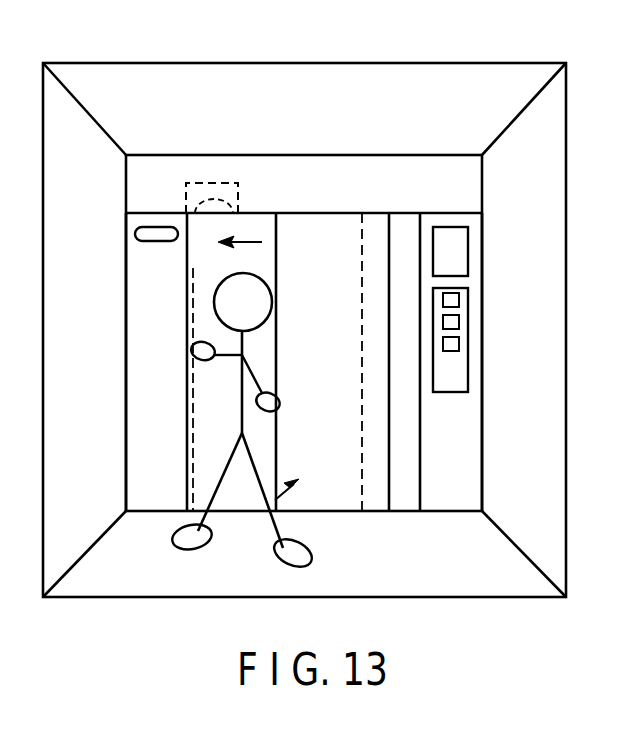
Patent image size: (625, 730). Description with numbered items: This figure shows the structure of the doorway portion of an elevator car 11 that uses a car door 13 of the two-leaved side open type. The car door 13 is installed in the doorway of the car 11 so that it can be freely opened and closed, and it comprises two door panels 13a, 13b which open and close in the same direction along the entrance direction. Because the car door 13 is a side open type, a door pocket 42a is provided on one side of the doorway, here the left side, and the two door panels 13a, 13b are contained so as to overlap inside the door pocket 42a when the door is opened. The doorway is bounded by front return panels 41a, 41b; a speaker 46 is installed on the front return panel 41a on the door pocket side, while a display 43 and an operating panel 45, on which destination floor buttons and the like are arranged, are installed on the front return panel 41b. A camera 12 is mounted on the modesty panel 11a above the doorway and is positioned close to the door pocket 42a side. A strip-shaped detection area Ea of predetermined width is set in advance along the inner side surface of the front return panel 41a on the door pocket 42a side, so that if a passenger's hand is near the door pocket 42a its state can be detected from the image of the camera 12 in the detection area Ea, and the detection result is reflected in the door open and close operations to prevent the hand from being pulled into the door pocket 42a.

The car 11 is at (509, 62).
The modesty panel 11a is at (388, 178).
The camera 12 is at (239, 199).
The car door 13 is at (277, 513).
The door panel 13a is at (323, 482).
The door panel 13b is at (373, 490).
The front return panel 41a is at (135, 428).
The front return panel 41b is at (462, 428).
The door pocket 42a is at (155, 337).
The display 43 is at (458, 252).
The operating panel 45 is at (468, 343).
The speaker 46 is at (153, 241).
The detection area Ea is at (187, 465).